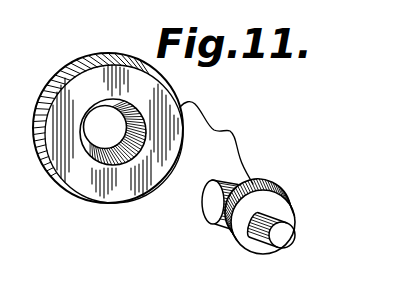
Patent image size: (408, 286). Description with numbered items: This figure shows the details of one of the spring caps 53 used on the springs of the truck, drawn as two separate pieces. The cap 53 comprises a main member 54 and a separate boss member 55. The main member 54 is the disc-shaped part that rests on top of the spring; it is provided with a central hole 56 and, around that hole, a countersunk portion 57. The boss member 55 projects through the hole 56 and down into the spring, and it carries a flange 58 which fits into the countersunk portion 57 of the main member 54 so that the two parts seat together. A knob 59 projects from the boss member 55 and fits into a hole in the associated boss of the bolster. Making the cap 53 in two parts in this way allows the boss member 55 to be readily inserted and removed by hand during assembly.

The spring cap 53 is at (223, 143).
The main member 54 is at (80, 182).
The boss member 55 is at (204, 203).
The hole 56 is at (125, 163).
The countersunk portion 57 is at (146, 150).
The flange 58 is at (297, 190).
The knob 59 is at (286, 237).